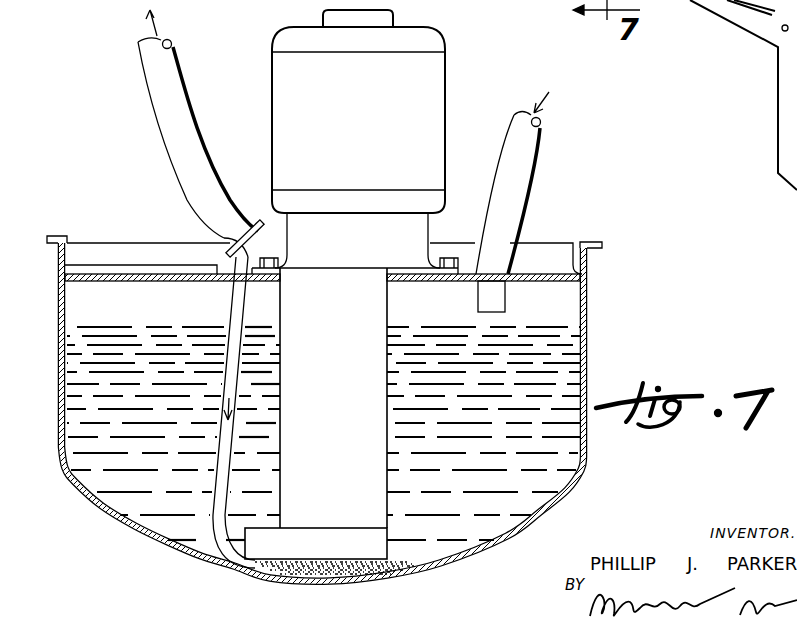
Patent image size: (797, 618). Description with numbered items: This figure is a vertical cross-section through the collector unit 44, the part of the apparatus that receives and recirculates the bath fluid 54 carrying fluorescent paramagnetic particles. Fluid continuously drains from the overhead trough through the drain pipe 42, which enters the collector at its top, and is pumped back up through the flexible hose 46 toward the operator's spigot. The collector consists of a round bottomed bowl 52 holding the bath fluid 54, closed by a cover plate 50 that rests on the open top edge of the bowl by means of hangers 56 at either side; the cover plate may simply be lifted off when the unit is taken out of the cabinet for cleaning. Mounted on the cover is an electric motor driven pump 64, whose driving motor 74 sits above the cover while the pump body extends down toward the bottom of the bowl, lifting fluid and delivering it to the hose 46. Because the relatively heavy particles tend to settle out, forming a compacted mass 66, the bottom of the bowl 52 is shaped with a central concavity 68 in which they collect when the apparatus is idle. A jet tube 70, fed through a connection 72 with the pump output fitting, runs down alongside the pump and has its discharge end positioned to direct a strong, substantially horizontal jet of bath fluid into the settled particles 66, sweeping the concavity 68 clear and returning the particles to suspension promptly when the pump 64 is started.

The drain pipe 42 is at (518, 189).
The collector unit 44 is at (588, 335).
The flexible hose 46 is at (168, 121).
The cover plate 50 is at (566, 284).
The round bottomed bowl 52 is at (588, 452).
The bath fluid 54 is at (572, 372).
The hangers 56 is at (50, 234).
The electric motor driven pump 64 is at (378, 548).
The settled particles 66 is at (272, 572).
The central concavity 68 is at (327, 577).
The jet tube 70 is at (218, 556).
The connection 72 is at (234, 240).
The driving motor 74 is at (282, 86).